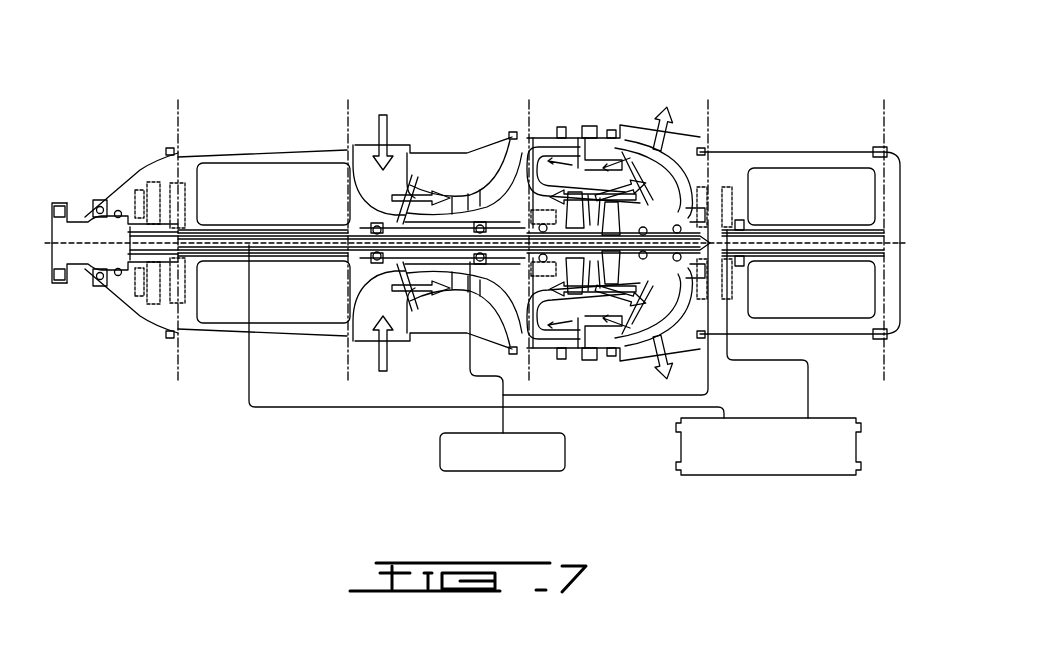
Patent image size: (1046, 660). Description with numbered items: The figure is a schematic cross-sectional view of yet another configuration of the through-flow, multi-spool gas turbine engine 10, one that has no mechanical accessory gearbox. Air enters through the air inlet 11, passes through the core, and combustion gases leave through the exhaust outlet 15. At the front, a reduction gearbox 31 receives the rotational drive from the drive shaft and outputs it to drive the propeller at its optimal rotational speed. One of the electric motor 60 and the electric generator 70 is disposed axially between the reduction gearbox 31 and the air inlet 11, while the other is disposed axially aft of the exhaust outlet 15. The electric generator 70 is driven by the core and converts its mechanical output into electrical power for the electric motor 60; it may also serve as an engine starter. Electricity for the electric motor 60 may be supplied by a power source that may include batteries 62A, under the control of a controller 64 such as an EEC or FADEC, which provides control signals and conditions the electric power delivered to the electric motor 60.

The gas turbine engine 10 is at (226, 94).
The reduction gearbox 31 is at (127, 160).
The electric motor 60 is at (285, 150).
The electric generator 70 is at (813, 158).
The air inlet 11 is at (367, 142).
The exhaust outlet 15 is at (640, 126).
The controller 64 is at (503, 475).
The batteries 62A is at (767, 478).